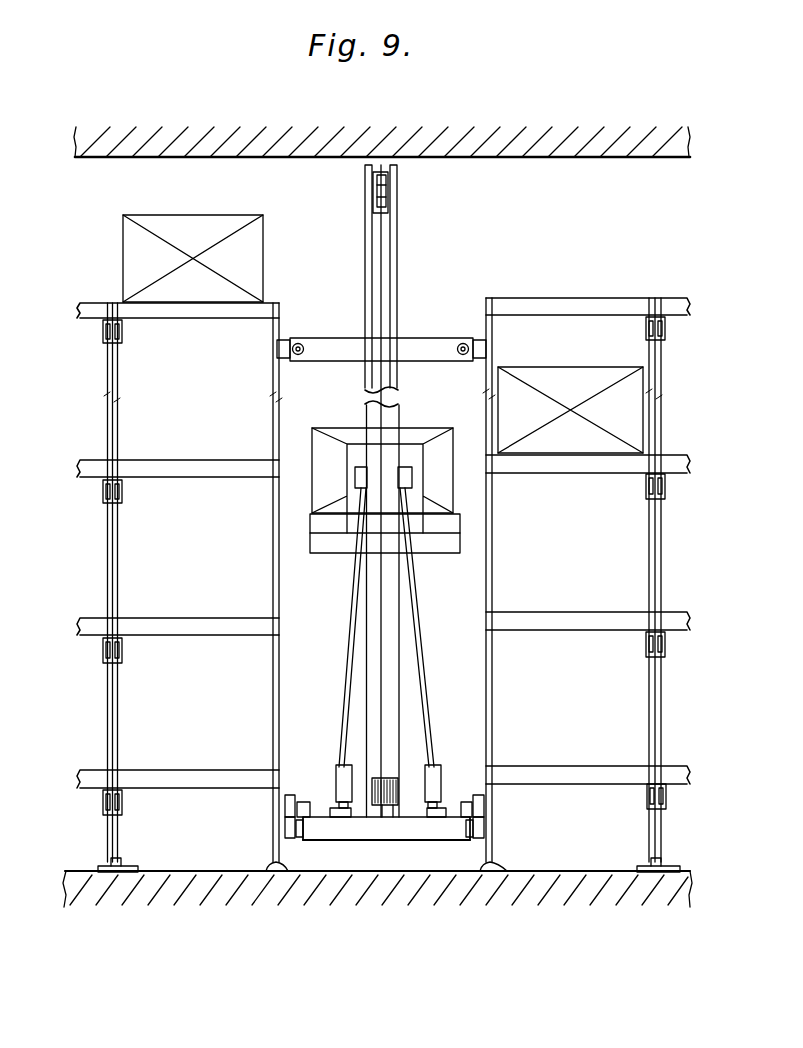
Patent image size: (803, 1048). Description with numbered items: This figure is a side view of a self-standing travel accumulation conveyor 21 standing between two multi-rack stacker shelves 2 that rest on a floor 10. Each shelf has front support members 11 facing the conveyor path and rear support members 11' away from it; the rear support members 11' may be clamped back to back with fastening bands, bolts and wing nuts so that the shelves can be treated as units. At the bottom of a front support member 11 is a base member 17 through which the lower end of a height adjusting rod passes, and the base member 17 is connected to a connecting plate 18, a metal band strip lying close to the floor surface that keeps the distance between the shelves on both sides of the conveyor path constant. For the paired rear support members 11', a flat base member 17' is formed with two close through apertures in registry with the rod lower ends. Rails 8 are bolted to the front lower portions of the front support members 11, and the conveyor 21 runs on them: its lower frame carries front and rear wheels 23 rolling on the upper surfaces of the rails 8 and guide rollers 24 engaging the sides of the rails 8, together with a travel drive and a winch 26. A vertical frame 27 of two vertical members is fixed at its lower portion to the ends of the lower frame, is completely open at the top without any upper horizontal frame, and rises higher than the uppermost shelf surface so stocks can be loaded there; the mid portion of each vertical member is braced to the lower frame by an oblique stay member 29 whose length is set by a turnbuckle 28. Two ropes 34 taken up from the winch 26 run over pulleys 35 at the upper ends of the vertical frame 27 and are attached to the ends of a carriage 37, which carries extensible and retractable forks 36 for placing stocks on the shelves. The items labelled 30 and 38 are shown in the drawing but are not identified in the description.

The multi-rack stacker shelves 2 is at (106, 611).
The rails 8 is at (292, 830).
The floor 10 is at (689, 871).
The front support members 11 is at (380, 584).
The rear support members 11' is at (384, 580).
The base member 17 is at (640, 844).
The base member 17' is at (137, 844).
The connecting plate 18 is at (431, 858).
The self-standing travel accumulation conveyor 21 is at (385, 840).
The front and rear wheels 23 is at (285, 803).
The guide rollers 24 is at (297, 841).
The winch 26 is at (394, 778).
The vertical frame 27 is at (368, 247).
The turnbuckle 28 is at (337, 789).
The oblique stay member 29 is at (342, 690).
The cross bar 30 is at (417, 346).
The ropes 34 is at (381, 241).
The pulleys 35 is at (372, 180).
The extensible and retractable forks 36 is at (312, 521).
The carriage 37 is at (312, 545).
The load box 38 is at (128, 240).